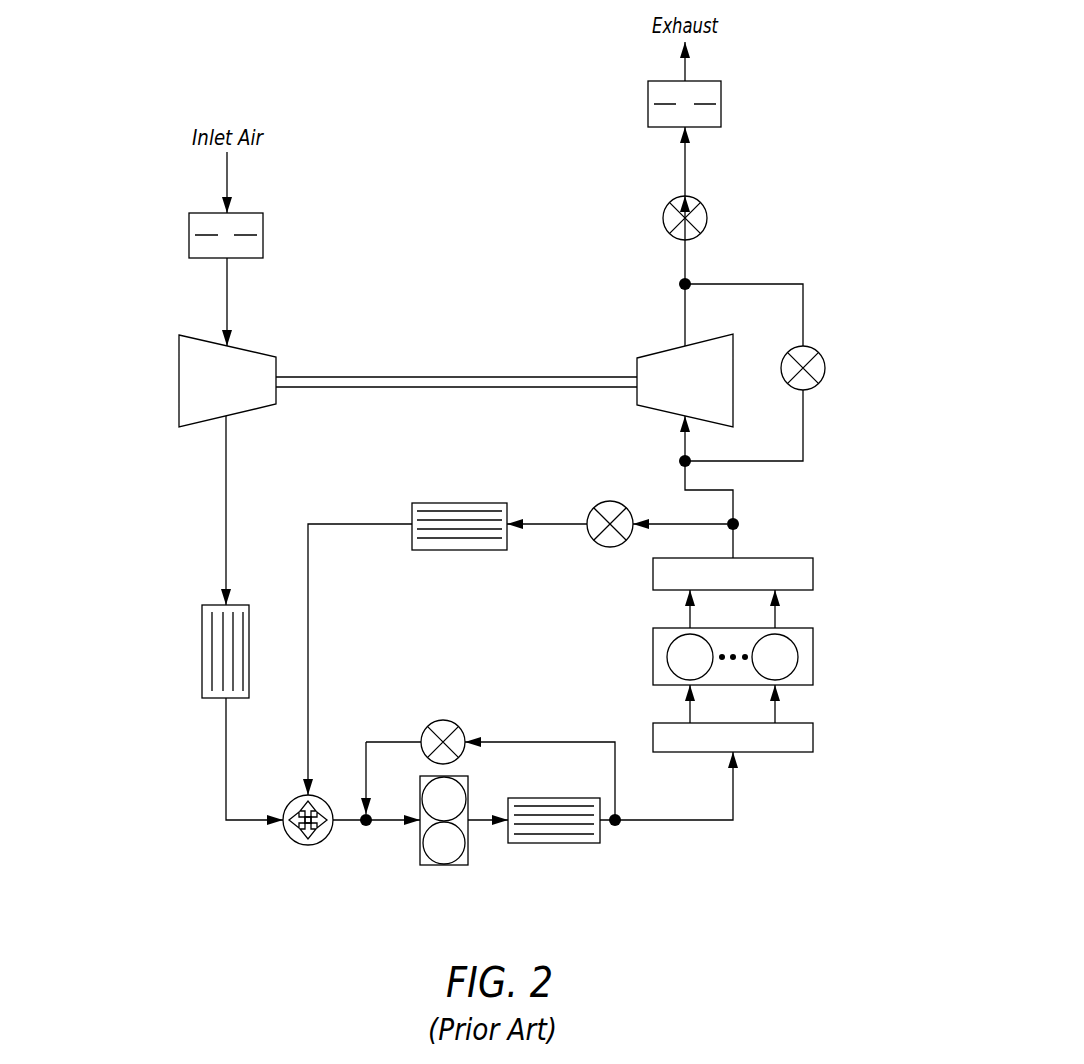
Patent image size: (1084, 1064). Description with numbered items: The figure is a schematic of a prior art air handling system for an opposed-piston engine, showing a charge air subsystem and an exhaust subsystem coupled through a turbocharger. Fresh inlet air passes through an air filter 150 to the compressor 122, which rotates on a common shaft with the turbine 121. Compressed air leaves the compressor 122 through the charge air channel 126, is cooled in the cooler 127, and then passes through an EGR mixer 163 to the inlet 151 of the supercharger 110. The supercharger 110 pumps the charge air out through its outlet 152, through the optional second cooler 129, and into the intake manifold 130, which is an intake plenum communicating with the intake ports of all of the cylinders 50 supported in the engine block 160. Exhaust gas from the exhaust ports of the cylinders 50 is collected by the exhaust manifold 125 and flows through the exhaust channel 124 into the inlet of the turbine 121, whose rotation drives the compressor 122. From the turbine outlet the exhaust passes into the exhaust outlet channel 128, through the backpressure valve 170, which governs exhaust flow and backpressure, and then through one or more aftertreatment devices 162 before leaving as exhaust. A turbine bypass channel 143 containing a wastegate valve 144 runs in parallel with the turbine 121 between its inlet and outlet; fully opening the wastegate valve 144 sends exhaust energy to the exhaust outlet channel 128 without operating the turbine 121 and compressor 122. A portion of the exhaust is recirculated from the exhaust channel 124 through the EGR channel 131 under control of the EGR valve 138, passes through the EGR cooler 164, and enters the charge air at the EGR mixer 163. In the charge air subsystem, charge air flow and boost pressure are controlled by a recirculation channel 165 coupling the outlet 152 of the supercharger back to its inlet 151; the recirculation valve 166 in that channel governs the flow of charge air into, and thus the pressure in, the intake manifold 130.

The cylinders 50 is at (667, 657).
The supercharger 110 is at (444, 865).
The turbine 121 is at (657, 353).
The compressor 122 is at (190, 427).
The exhaust channel 124 is at (685, 480).
The exhaust manifold 125 is at (813, 577).
The charge air channel 126 is at (158, 565).
The cooler 127 is at (202, 655).
The exhaust outlet channel 128 is at (622, 180).
The second cooler 129 is at (577, 843).
The intake manifold 130 is at (813, 740).
The EGR channel 131 is at (533, 497).
The EGR valve 138 is at (610, 547).
The turbine bypass channel 143 is at (820, 315).
The wastegate valve 144 is at (825, 370).
The air filter 150 is at (263, 221).
The inlet 151 is at (372, 826).
The outlet 152 is at (478, 824).
The engine block 160 is at (813, 668).
The aftertreatment devices 162 is at (721, 107).
The EGR mixer 163 is at (308, 845).
The EGR cooler 164 is at (455, 550).
The recirculation channel 165 is at (517, 722).
The recirculation valve 166 is at (428, 726).
The backpressure valve 170 is at (664, 220).